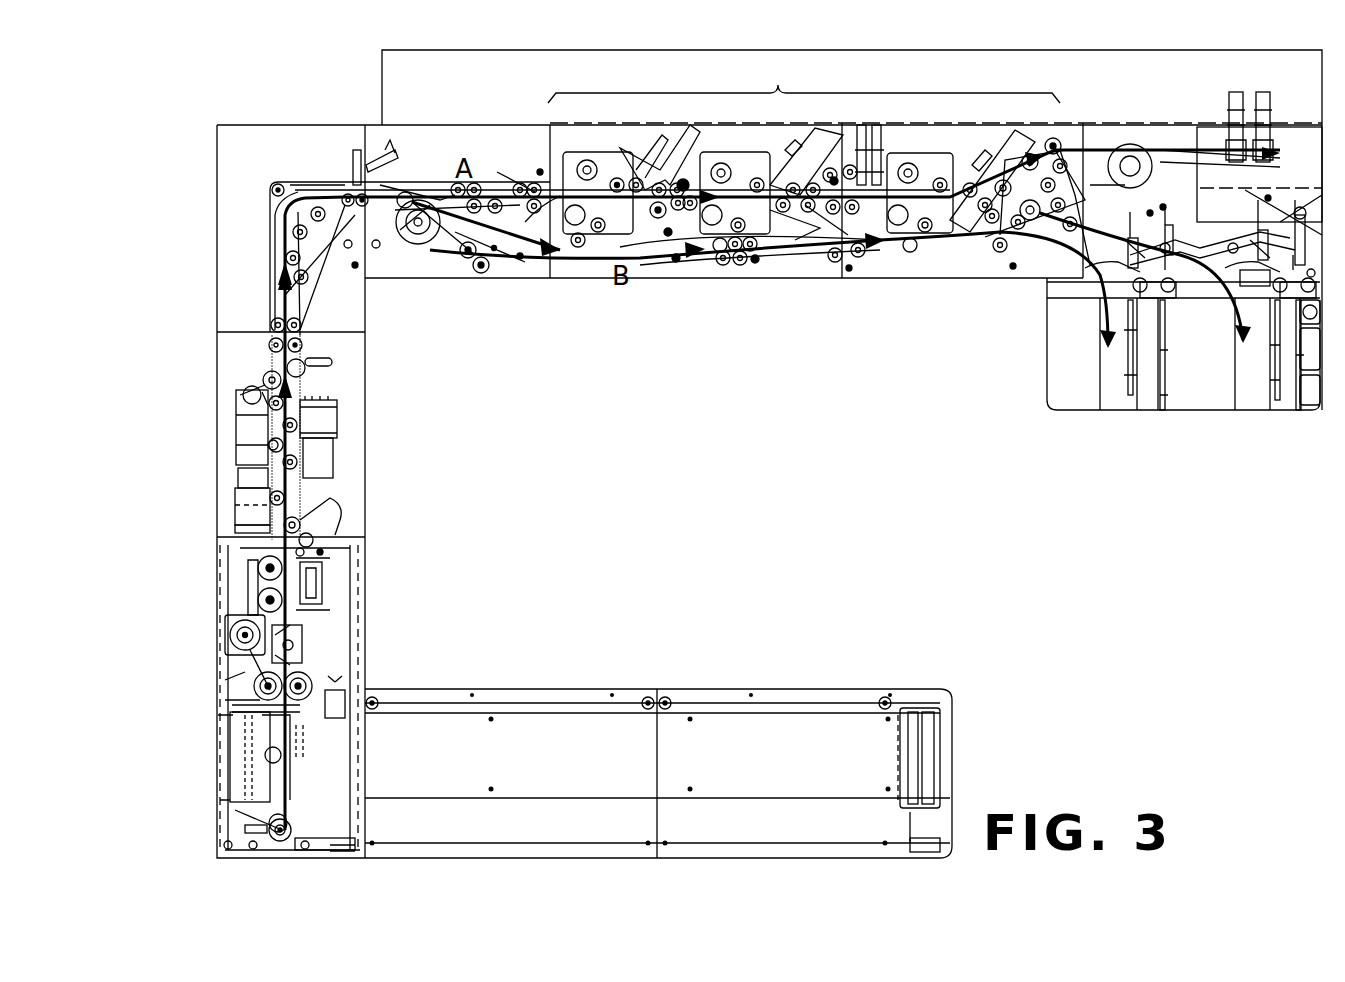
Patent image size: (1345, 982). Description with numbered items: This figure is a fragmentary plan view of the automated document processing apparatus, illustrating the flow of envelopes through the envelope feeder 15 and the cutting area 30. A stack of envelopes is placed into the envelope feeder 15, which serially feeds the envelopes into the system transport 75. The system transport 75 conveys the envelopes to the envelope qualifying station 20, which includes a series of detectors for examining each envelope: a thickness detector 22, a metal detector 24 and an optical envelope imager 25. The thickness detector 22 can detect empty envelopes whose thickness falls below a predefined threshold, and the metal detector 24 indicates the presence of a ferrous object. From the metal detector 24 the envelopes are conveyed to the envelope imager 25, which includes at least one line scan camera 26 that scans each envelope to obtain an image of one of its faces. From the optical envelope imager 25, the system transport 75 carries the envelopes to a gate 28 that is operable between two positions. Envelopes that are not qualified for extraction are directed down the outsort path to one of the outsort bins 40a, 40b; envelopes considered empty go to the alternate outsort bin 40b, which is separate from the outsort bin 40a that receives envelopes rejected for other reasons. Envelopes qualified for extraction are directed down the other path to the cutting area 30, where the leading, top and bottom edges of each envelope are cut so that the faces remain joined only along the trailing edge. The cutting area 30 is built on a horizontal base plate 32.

The envelope feeder 15 is at (270, 822).
The envelope qualifying station 20 is at (282, 758).
The thickness detector 22 is at (308, 622).
The metal detector 24 is at (325, 578).
The optical envelope imager 25 is at (232, 486).
The line scan camera 26 is at (325, 412).
The gate 28 is at (418, 222).
The cutting area 30 is at (935, 178).
The horizontal base plate 32 is at (430, 140).
The system transport 75 is at (282, 306).
The outsort bin 40a is at (1075, 388).
The alternate outsort bin 40b is at (1220, 398).